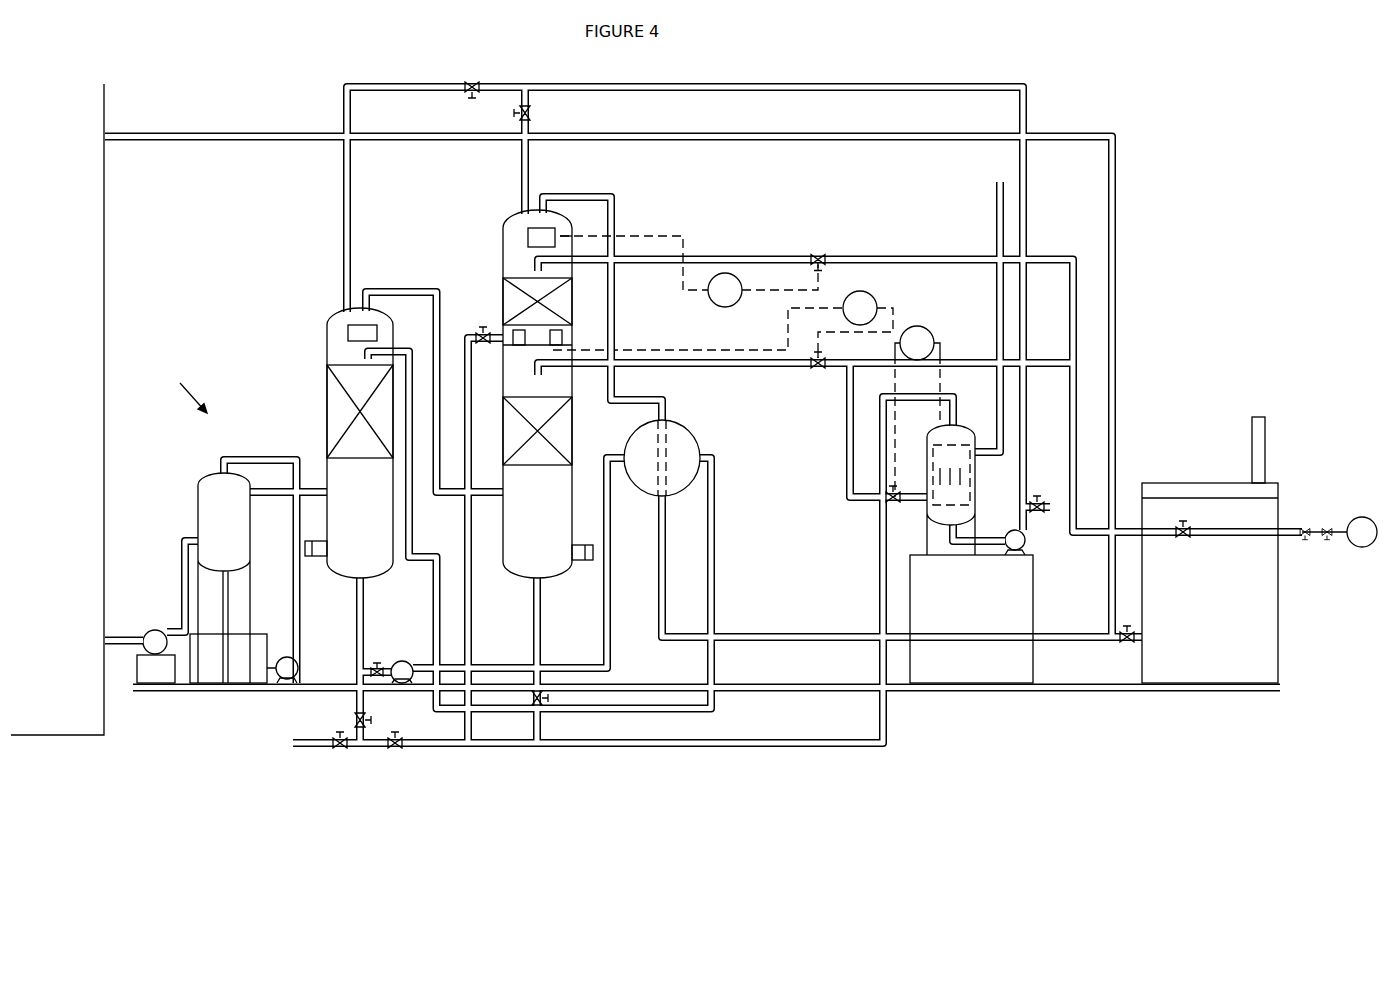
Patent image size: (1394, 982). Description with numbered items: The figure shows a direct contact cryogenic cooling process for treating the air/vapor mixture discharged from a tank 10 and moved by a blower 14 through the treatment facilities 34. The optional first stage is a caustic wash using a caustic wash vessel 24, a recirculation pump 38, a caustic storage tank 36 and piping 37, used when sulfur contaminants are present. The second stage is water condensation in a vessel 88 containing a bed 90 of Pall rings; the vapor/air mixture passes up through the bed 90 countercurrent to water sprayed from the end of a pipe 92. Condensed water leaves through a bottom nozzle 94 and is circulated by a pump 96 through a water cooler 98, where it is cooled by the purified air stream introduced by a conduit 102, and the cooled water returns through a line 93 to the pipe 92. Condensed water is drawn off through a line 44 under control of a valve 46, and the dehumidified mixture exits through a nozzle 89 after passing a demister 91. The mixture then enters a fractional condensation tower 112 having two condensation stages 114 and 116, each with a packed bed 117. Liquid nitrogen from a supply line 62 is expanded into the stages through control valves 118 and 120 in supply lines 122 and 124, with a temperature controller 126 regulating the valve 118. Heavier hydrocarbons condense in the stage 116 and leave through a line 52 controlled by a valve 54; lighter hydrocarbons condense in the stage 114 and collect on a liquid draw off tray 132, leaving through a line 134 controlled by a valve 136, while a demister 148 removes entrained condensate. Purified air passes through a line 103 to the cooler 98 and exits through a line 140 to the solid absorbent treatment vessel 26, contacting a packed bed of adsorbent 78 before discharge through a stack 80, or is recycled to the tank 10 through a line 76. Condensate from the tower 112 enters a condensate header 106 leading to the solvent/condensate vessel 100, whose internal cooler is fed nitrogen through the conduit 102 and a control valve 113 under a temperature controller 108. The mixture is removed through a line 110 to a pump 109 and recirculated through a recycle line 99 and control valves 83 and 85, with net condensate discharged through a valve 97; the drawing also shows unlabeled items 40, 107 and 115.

The tank 10 is at (84, 214).
The blower 14 is at (155, 630).
The caustic wash vessel 24 is at (205, 507).
The solid absorbent treatment vessel 26 is at (1228, 522).
The treatment facilities 34 is at (186, 388).
The caustic storage tank 36 is at (218, 668).
The piping 37 is at (295, 508).
The recirculation pump 38 is at (282, 679).
The feed line 40 is at (313, 487).
The line 44 is at (363, 738).
The valve 46 is at (352, 720).
The line 52 is at (543, 728).
The valve 54 is at (532, 702).
The supply line 62 is at (1073, 422).
The line 76 is at (700, 138).
The packed bed of adsorbent 78 is at (1193, 493).
The stack 80 is at (1252, 420).
The control valve 83 is at (465, 89).
The control valve 85 is at (533, 113).
The vessel 88 is at (333, 353).
The nozzle 89 is at (362, 296).
The bed 90 is at (345, 400).
The demister 91 is at (357, 326).
The pipe 92 is at (405, 346).
The line 93 is at (608, 473).
The bottom nozzle 94 is at (356, 645).
The pump 96 is at (397, 662).
The valve 97 is at (1037, 497).
The water cooler 98 is at (676, 447).
The recycle line 99 is at (1023, 457).
The solvent/condensate vessel 100 is at (932, 508).
The conduit 102 is at (848, 428).
The line 103 is at (567, 198).
The condensate header 106 is at (815, 740).
The outlet line 107 is at (996, 228).
The temperature controller 108 is at (926, 330).
The pump 109 is at (1026, 543).
The line 110 is at (965, 660).
The fractional condensation tower 112 is at (503, 247).
The control valve 113 is at (894, 490).
The condensation stage 114 is at (503, 268).
The valve 115 is at (1188, 534).
The condensation stage 116 is at (537, 336).
The packed bed 117 is at (540, 453).
The control valve 118 is at (812, 366).
The control valve 120 is at (820, 255).
The supply line 122 is at (647, 358).
The supply line 124 is at (702, 254).
The temperature controller 126 is at (876, 302).
The liquid draw off tray 132 is at (570, 345).
The line 134 is at (478, 336).
The valve 136 is at (566, 236).
The line 140 is at (857, 636).
The demister 148 is at (534, 232).